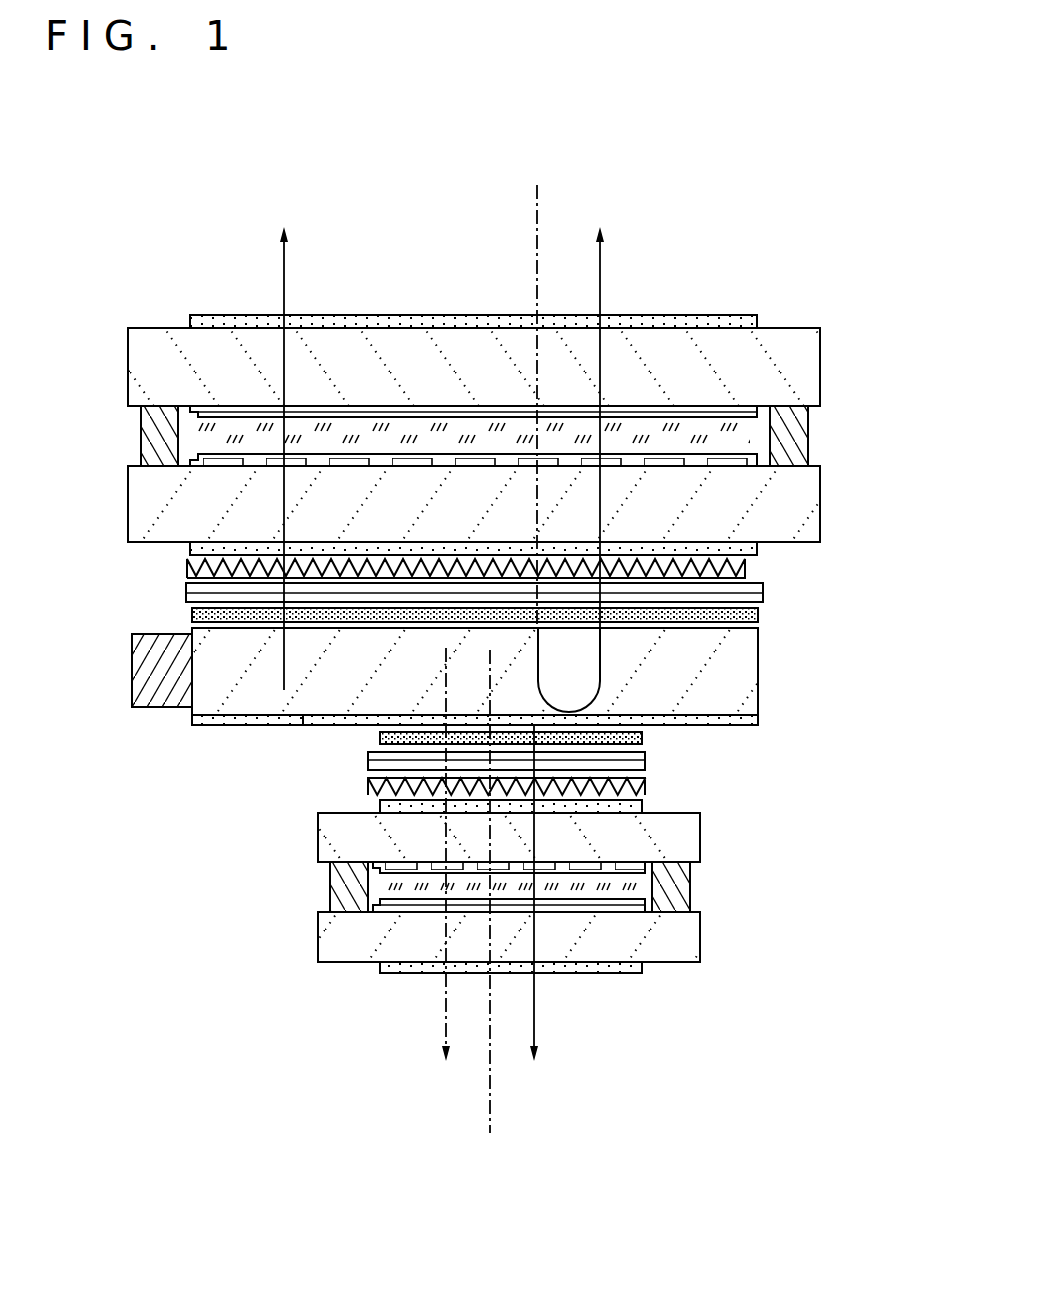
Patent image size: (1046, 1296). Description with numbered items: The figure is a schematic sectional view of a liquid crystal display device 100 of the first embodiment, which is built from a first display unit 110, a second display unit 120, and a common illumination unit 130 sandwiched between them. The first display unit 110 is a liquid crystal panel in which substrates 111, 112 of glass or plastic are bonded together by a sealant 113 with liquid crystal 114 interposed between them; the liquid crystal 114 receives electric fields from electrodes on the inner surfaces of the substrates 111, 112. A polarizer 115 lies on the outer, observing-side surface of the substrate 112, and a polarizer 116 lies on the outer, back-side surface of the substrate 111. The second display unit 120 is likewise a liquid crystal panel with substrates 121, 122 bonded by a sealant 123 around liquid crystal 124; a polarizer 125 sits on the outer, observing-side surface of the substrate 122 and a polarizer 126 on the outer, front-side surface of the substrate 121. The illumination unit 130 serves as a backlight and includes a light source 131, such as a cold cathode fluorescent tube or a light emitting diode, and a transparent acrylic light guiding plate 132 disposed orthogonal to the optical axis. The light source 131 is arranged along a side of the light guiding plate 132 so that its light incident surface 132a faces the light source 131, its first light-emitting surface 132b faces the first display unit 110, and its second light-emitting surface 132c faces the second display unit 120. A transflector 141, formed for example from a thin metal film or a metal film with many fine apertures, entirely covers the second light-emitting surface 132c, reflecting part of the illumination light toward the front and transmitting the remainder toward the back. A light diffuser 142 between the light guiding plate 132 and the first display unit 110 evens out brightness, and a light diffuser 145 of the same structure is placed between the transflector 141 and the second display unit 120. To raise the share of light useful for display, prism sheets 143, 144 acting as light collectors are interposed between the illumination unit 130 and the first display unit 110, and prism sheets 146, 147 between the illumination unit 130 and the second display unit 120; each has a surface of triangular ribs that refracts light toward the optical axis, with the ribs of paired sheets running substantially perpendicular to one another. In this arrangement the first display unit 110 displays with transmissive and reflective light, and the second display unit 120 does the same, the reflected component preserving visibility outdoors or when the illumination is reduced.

The liquid crystal display device 100 is at (447, 172).
The first display unit 110 is at (490, 408).
The substrate 111 is at (808, 505).
The substrate 112 is at (813, 367).
The sealant 113 is at (798, 435).
The liquid crystal 114 is at (190, 435).
The polarizer 115 is at (483, 322).
The polarizer 116 is at (758, 548).
The second display unit 120 is at (507, 936).
The substrate 121 is at (320, 837).
The substrate 122 is at (318, 938).
The sealant 123 is at (330, 888).
The liquid crystal 124 is at (640, 885).
The polarizer 125 is at (400, 975).
The polarizer 126 is at (642, 808).
The illumination unit 130 is at (501, 735).
The light source 131 is at (150, 708).
The light guiding plate 132 is at (750, 695).
The light incident surface 132a is at (167, 708).
The first light-emitting surface 132b is at (758, 607).
The second light-emitting surface 132c is at (303, 727).
The transflector 141 is at (277, 728).
The light diffuser 142 is at (190, 617).
The prism sheet 143 is at (763, 593).
The prism sheet 144 is at (188, 568).
The light diffuser 145 is at (643, 740).
The prism sheet 146 is at (368, 756).
The prism sheet 147 is at (645, 790).